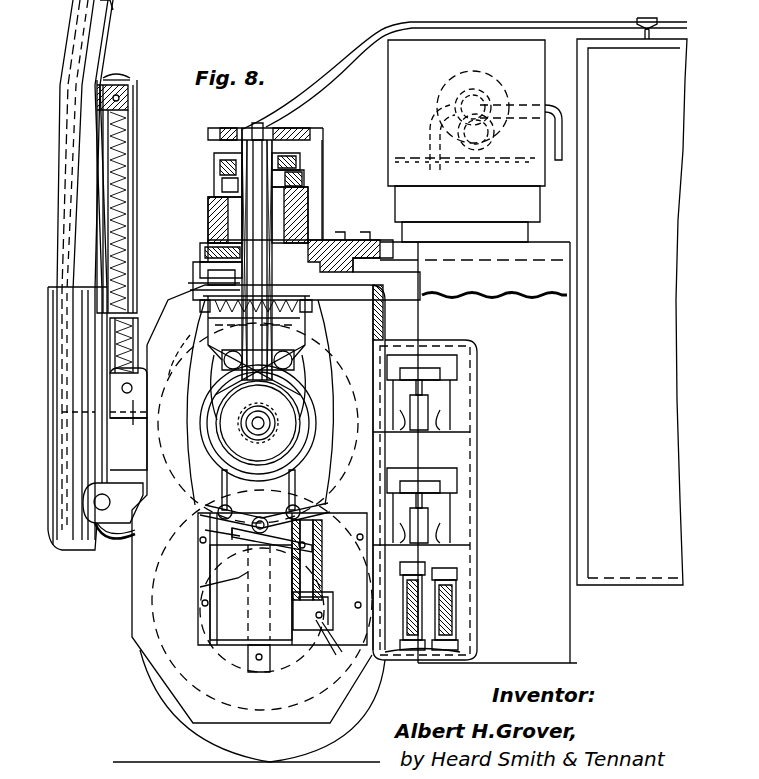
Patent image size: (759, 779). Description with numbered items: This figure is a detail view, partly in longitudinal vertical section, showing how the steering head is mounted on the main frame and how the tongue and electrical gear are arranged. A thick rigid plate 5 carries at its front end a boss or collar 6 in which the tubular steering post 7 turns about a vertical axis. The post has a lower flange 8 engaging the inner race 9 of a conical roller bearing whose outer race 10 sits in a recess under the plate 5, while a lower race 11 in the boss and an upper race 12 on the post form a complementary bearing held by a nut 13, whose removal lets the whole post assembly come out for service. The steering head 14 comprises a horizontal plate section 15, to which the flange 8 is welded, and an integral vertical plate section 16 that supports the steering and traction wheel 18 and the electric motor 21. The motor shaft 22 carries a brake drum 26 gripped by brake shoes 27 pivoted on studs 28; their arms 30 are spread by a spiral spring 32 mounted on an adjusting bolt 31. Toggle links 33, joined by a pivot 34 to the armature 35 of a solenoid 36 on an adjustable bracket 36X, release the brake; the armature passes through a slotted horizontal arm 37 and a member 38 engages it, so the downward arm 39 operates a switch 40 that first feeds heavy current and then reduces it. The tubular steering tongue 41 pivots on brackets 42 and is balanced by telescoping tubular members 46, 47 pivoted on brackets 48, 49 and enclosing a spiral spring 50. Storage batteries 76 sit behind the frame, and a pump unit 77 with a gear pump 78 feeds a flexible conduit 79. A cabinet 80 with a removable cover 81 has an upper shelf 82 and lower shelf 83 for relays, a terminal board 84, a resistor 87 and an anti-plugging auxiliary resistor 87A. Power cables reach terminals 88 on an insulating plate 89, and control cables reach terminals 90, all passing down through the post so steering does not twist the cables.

The plate 5 is at (378, 243).
The boss or collar 6 is at (306, 211).
The steering post 7 is at (208, 220).
The lower flange 8 is at (205, 271).
The inner race 9 is at (205, 252).
The outer race 10 is at (215, 246).
The lower race 11 is at (305, 182).
The upper race 12 is at (300, 172).
The nut 13 is at (222, 170).
The steering head 14 is at (195, 291).
The horizontal plate section 15 is at (208, 279).
The vertical plate section 16 is at (380, 332).
The steering and traction wheel 18 is at (160, 721).
The electric motor 21 is at (345, 461).
The motor shaft 22 is at (258, 420).
The brake drum 26 is at (315, 359).
The brake shoes 27 is at (190, 389).
The studs 28 is at (230, 365).
The arms 30 is at (210, 331).
The adjusting bolt 31 is at (206, 319).
The spiral spring 32 is at (186, 369).
The toggle links 33 is at (215, 512).
The pivot 34 is at (260, 516).
The armature 35 is at (205, 531).
The solenoid 36 is at (225, 613).
The bracket 36X is at (240, 649).
The horizontal arm 37 is at (305, 541).
The member 38 is at (205, 541).
The arm 39 is at (322, 556).
The switch 40 is at (338, 655).
The steering tongue 41 is at (57, 211).
The brackets 42 is at (123, 482).
The upper telescoping tubular member 46 is at (130, 126).
The lower telescoping tubular member 47 is at (138, 345).
The bracket 48 is at (118, 97).
The bracket 49 is at (132, 426).
The spiral spring 50 is at (128, 168).
The storage batteries 76 is at (658, 293).
The pump unit 77 is at (546, 86).
The gear pump 78 is at (490, 96).
The flexible conduit 79 is at (563, 136).
The cabinet 80 is at (450, 456).
The removable cover 81 is at (480, 511).
The upper shelf 82 is at (452, 439).
The lower shelf 83 is at (450, 569).
The terminal board 84 is at (425, 606).
The resistor 87 is at (416, 618).
The auxiliary resistor 87A is at (450, 597).
The terminals 88 is at (250, 120).
The insulating plate 89 is at (212, 127).
The terminals 90 is at (260, 122).